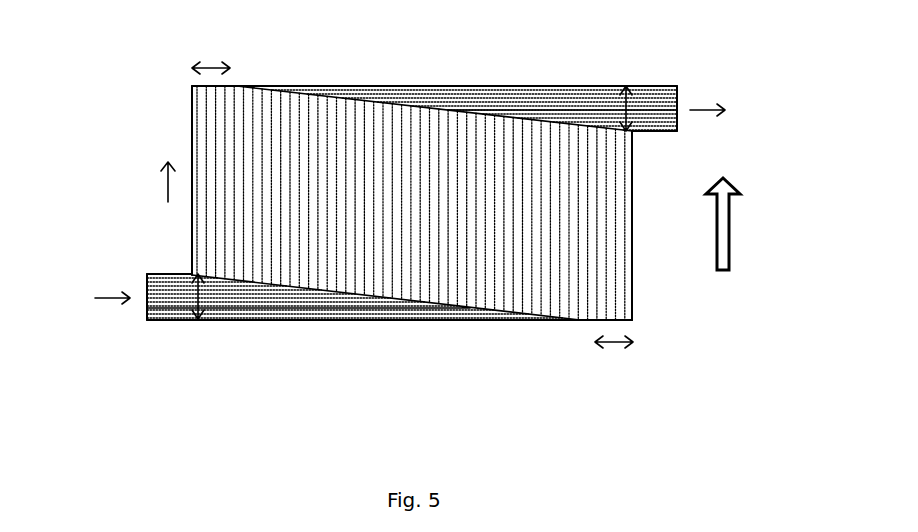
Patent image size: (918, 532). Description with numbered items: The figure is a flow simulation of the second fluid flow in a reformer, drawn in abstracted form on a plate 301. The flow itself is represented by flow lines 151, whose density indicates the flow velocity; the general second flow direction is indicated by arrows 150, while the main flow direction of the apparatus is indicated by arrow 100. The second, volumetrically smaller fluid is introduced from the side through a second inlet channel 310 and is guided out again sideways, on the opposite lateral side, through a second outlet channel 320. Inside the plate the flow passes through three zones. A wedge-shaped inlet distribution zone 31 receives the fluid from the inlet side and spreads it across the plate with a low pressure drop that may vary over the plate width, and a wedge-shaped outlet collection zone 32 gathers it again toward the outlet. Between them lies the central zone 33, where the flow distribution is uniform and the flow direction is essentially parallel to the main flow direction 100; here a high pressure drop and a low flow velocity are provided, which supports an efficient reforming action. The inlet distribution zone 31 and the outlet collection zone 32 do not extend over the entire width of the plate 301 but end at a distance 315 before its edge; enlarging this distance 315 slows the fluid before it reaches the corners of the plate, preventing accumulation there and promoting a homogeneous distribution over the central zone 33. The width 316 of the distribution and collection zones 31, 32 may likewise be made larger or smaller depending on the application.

The inlet distribution zone 31 is at (338, 320).
The outlet collection zone 32 is at (473, 92).
The central zone 33 is at (527, 201).
The main flow direction 100 is at (726, 222).
The second flow direction arrows 150 is at (708, 110).
The flow lines 151 is at (327, 167).
The plate 301 is at (632, 293).
The second inlet channel 310 is at (172, 305).
The distance 315 is at (210, 68).
The width of the distribution and collection zones 316 is at (625, 88).
The second outlet channel 320 is at (660, 95).